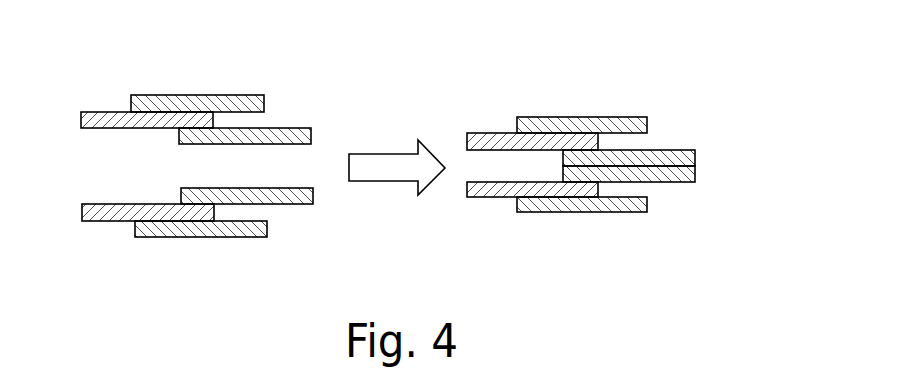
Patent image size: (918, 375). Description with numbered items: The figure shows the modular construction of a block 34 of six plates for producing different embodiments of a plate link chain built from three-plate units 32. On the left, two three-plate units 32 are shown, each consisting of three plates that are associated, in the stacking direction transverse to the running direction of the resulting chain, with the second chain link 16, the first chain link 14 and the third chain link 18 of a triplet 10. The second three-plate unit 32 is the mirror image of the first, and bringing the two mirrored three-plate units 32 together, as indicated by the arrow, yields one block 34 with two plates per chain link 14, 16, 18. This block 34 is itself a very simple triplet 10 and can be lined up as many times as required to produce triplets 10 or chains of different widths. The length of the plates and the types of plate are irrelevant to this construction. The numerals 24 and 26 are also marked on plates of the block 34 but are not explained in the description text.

The triplet 10 is at (762, 50).
The block 34 is at (604, 145).
The first chain link 14 is at (492, 98).
The second chain link 16 is at (577, 95).
The third chain link 18 is at (683, 130).
The electrode plate 24 is at (467, 140).
The lower layer of middle plate 26 is at (695, 172).
The three-plate unit 32 is at (90, 65).